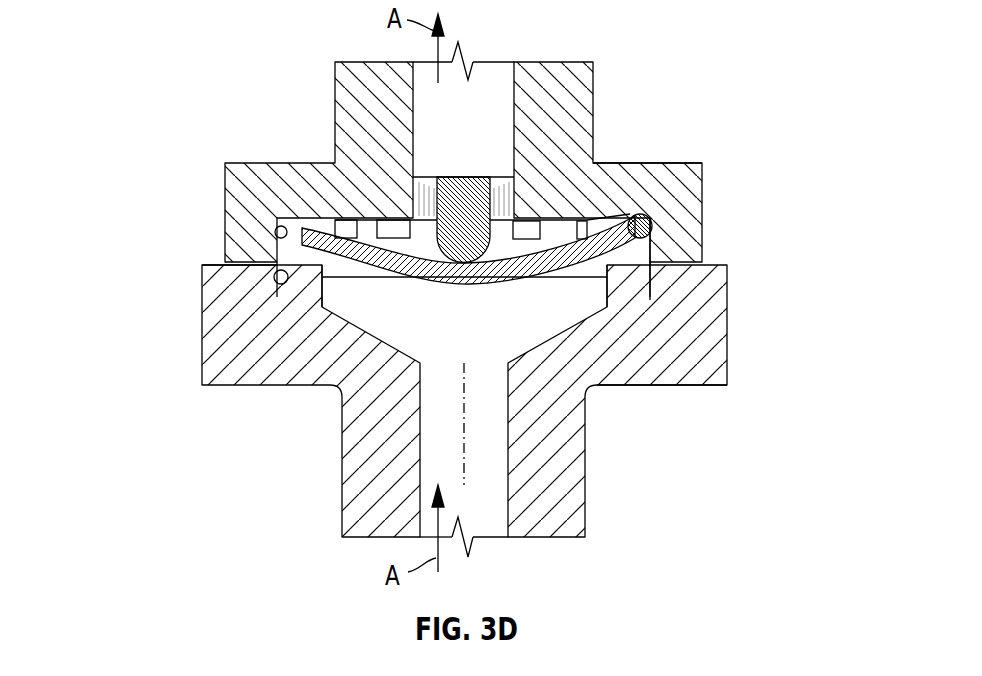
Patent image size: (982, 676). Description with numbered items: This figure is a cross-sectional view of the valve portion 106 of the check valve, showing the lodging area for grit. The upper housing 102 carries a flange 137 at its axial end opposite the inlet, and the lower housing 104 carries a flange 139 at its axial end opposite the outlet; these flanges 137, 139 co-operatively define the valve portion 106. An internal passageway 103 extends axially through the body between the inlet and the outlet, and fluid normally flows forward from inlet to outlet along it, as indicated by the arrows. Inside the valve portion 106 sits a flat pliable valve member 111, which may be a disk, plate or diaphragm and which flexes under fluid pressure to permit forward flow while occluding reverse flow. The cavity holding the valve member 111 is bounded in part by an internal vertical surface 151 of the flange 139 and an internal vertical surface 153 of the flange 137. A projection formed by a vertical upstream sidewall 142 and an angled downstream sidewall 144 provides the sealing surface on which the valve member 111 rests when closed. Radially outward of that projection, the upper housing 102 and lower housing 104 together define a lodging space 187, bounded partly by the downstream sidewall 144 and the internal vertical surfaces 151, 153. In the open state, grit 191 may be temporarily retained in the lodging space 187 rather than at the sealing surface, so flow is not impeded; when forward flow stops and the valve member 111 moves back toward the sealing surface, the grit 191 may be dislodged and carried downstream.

The upper housing 102 is at (728, 365).
The internal passageway 103 is at (485, 144).
The lower housing 104 is at (703, 230).
The valve portion 106 is at (742, 296).
The valve member 111 is at (278, 216).
The flange 137 is at (642, 385).
The flange 139 is at (681, 163).
The vertical upstream sidewall 142 is at (325, 293).
The angled downstream sidewall 144 is at (235, 323).
The internal vertical surface 151 is at (275, 232).
The internal vertical surface 153 is at (278, 283).
The lodging space 187 is at (640, 278).
The grit 191 is at (652, 225).